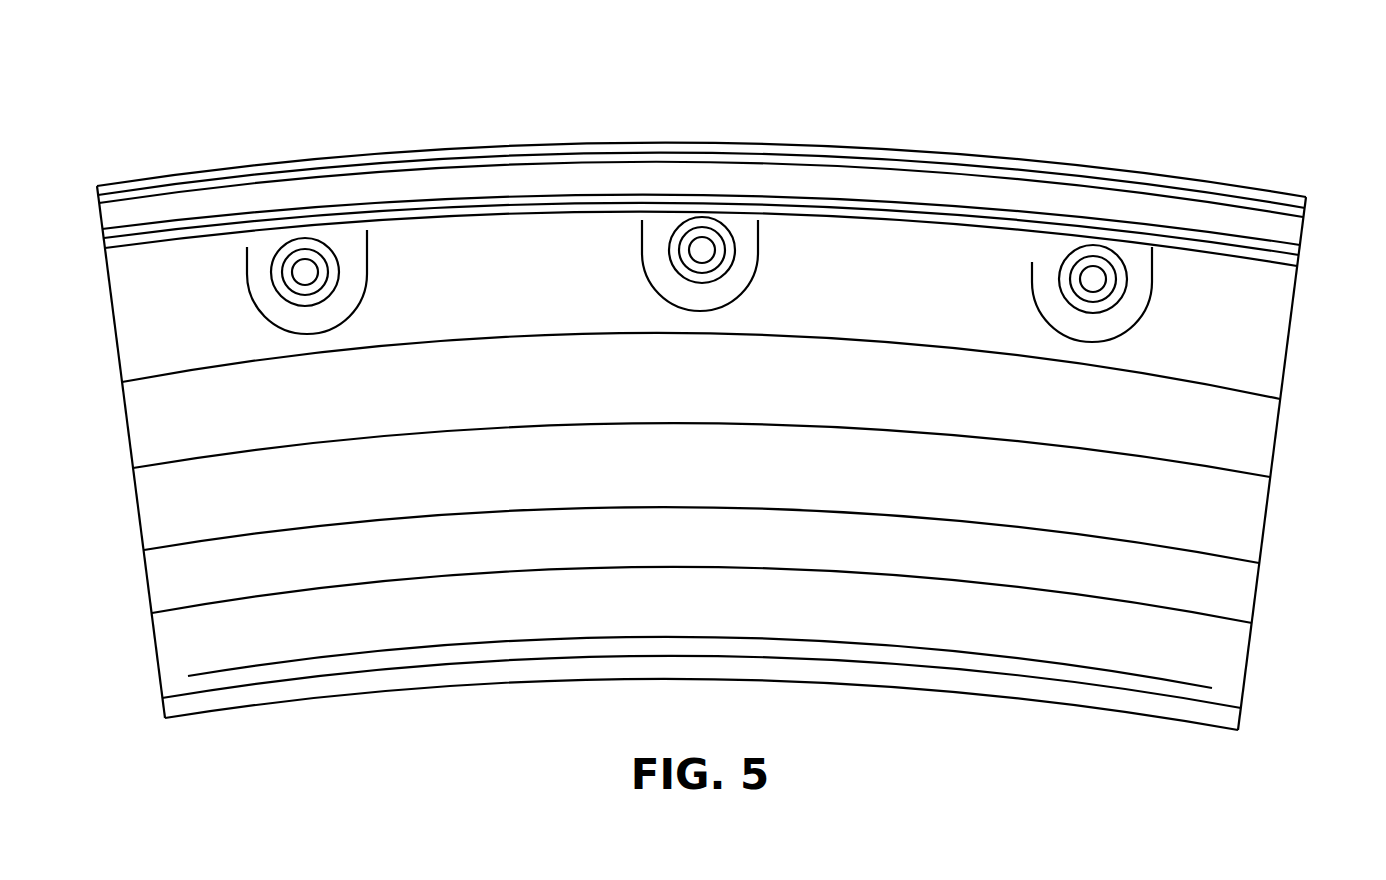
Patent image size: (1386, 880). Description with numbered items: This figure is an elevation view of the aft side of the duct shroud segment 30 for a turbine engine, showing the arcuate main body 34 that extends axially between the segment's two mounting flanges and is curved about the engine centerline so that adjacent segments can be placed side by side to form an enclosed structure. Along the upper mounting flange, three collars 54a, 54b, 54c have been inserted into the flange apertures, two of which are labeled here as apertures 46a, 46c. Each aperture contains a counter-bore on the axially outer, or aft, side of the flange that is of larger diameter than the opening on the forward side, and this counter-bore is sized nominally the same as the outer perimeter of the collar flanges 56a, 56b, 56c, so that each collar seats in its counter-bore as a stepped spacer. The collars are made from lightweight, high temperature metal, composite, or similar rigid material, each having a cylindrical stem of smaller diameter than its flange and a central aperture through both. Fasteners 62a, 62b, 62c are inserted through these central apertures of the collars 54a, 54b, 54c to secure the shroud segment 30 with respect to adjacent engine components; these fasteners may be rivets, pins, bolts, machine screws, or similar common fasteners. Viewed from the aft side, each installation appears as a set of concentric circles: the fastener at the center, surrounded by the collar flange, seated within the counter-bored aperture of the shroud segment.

The duct shroud segment 30 is at (878, 117).
The main body 34 is at (1288, 358).
The aperture 46a is at (247, 237).
The aperture 46c is at (643, 220).
The collar 54a is at (1055, 262).
The collar 54b is at (272, 243).
The collar 54c is at (666, 228).
The flange 56a is at (1132, 270).
The flange 56b is at (348, 252).
The flange 56c is at (744, 238).
The fastener 62a is at (1093, 278).
The fastener 62b is at (306, 270).
The fastener 62c is at (702, 250).